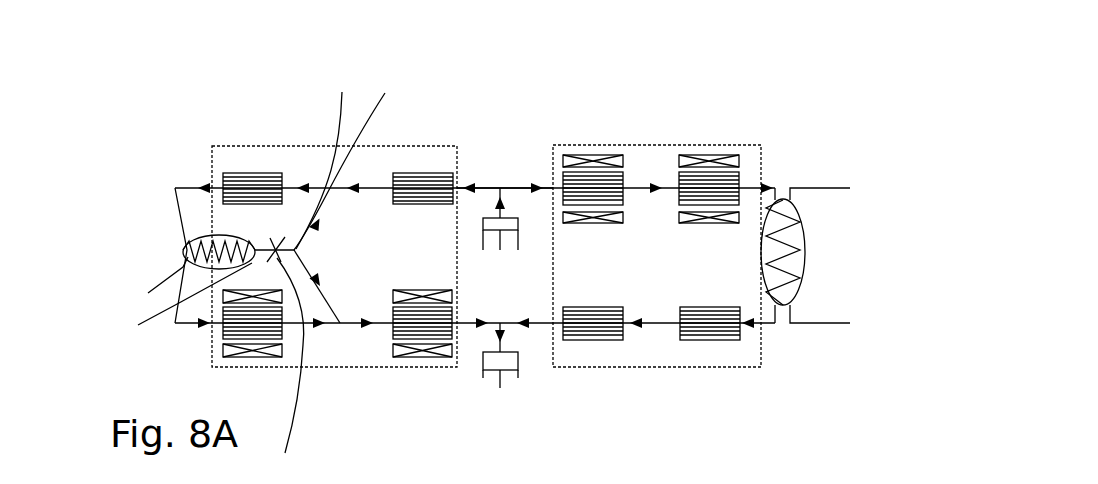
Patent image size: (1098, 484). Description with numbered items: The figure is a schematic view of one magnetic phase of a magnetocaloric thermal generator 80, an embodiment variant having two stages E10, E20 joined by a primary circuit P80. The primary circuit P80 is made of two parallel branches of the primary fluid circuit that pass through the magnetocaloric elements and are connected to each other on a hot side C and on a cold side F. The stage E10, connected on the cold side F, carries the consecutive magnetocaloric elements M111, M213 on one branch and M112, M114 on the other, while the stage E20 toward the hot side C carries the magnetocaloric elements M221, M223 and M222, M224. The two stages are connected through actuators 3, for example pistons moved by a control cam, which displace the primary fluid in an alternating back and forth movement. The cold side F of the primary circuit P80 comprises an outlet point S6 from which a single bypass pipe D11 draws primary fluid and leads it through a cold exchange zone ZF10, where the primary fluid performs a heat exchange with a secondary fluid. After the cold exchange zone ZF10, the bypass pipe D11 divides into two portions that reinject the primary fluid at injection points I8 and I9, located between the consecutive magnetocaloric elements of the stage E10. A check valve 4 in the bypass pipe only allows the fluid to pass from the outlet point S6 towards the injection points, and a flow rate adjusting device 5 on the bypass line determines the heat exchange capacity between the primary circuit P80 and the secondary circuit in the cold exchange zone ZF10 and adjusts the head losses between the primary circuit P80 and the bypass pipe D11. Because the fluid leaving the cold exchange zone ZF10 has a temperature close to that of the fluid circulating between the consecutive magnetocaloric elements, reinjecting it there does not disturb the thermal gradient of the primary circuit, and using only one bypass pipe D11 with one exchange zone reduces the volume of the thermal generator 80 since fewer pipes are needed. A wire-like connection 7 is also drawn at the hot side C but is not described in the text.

The magnetocaloric thermal generator 80 is at (983, 146).
The stage E10 is at (343, 368).
The stage E20 is at (638, 368).
The magnetocaloric element M111 is at (253, 173).
The magnetocaloric element M112 is at (265, 328).
The magnetocaloric element M213 is at (408, 173).
The magnetocaloric element M114 is at (425, 327).
The magnetocaloric element M221 is at (588, 187).
The magnetocaloric element M223 is at (710, 182).
The magnetocaloric element M222 is at (585, 330).
The magnetocaloric element M224 is at (712, 325).
The primary circuit P80 is at (520, 187).
The actuator 3 is at (495, 232).
The cold exchange zone ZF10 is at (188, 238).
The outlet point S6 is at (187, 257).
The cold side F is at (115, 231).
The bypass pipe D11 is at (337, 153).
The injection point I8 is at (347, 155).
The injection point I9 is at (335, 312).
The check valve 4 is at (318, 228).
The flow rate adjusting device 5 is at (865, 255).
The conductor 7 is at (830, 188).
The hot side C is at (778, 181).